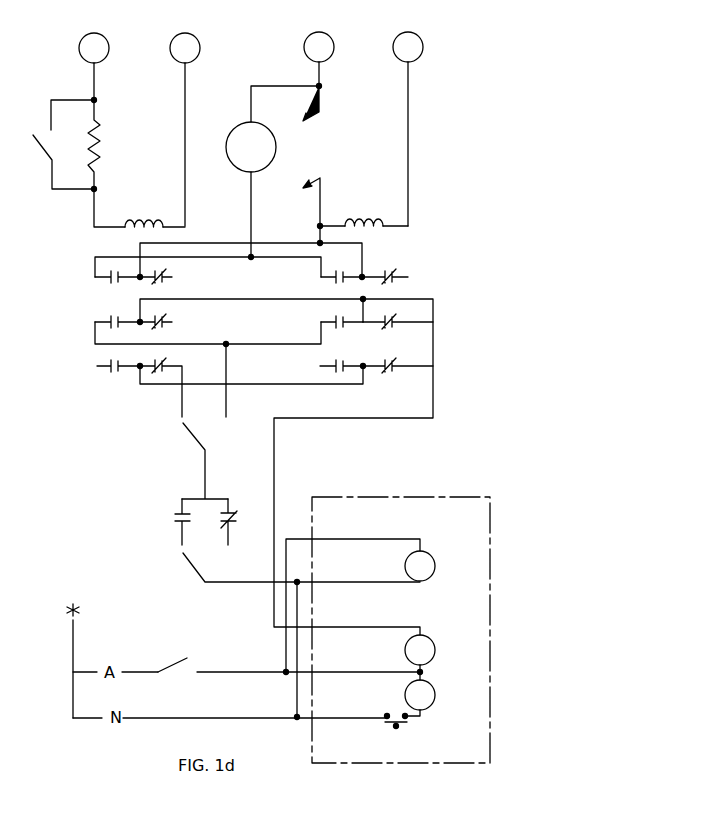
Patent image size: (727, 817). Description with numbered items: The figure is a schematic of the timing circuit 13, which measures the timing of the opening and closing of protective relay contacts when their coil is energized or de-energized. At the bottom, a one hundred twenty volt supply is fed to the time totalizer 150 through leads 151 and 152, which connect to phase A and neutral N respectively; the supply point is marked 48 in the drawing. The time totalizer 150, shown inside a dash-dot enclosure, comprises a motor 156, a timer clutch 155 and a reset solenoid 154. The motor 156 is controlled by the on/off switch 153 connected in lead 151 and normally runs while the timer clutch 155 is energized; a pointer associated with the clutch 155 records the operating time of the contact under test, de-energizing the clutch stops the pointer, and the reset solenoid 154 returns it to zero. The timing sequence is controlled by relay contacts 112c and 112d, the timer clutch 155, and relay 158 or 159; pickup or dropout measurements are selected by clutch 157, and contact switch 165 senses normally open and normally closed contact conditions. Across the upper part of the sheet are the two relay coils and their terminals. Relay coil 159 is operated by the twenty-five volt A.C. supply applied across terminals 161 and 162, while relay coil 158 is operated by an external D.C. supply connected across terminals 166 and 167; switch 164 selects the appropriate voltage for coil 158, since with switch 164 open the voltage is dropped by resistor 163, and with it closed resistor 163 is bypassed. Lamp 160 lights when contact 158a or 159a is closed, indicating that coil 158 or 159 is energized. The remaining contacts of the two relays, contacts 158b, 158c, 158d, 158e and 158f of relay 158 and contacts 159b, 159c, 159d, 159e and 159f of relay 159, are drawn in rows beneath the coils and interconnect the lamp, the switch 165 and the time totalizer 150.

The terminal 166 is at (98, 22).
The terminal 167 is at (189, 22).
The terminal 161 is at (324, 22).
The terminal 162 is at (408, 32).
The lamp 160 is at (276, 146).
The resistor 163 is at (102, 142).
The switch 164 is at (43, 159).
The relay coil 158 is at (143, 225).
The relay coil 159 is at (363, 224).
The contact 158a is at (108, 283).
The contact 158b is at (166, 279).
The contact 158c is at (109, 316).
The contact 158d is at (165, 313).
The contact 158e is at (111, 360).
The contact 158f is at (173, 351).
The contact 159a is at (334, 282).
The contact 159b is at (393, 267).
The contact 159c is at (336, 316).
The contact 159d is at (400, 307).
The contact 159e is at (336, 360).
The contact 159f is at (398, 351).
The contact switch 165 is at (193, 438).
The relay contact 112c is at (176, 516).
The relay contact 112d is at (239, 514).
The clutch 157 is at (191, 571).
The timing circuit 13 is at (451, 463).
The time totalizer 150 is at (490, 745).
The motor 156 is at (435, 568).
The timer clutch 155 is at (432, 639).
The reset solenoid 154 is at (434, 690).
The power supply 48 is at (73, 660).
The lead 151 is at (80, 672).
The lead 152 is at (73, 720).
The on/off switch 153 is at (176, 662).